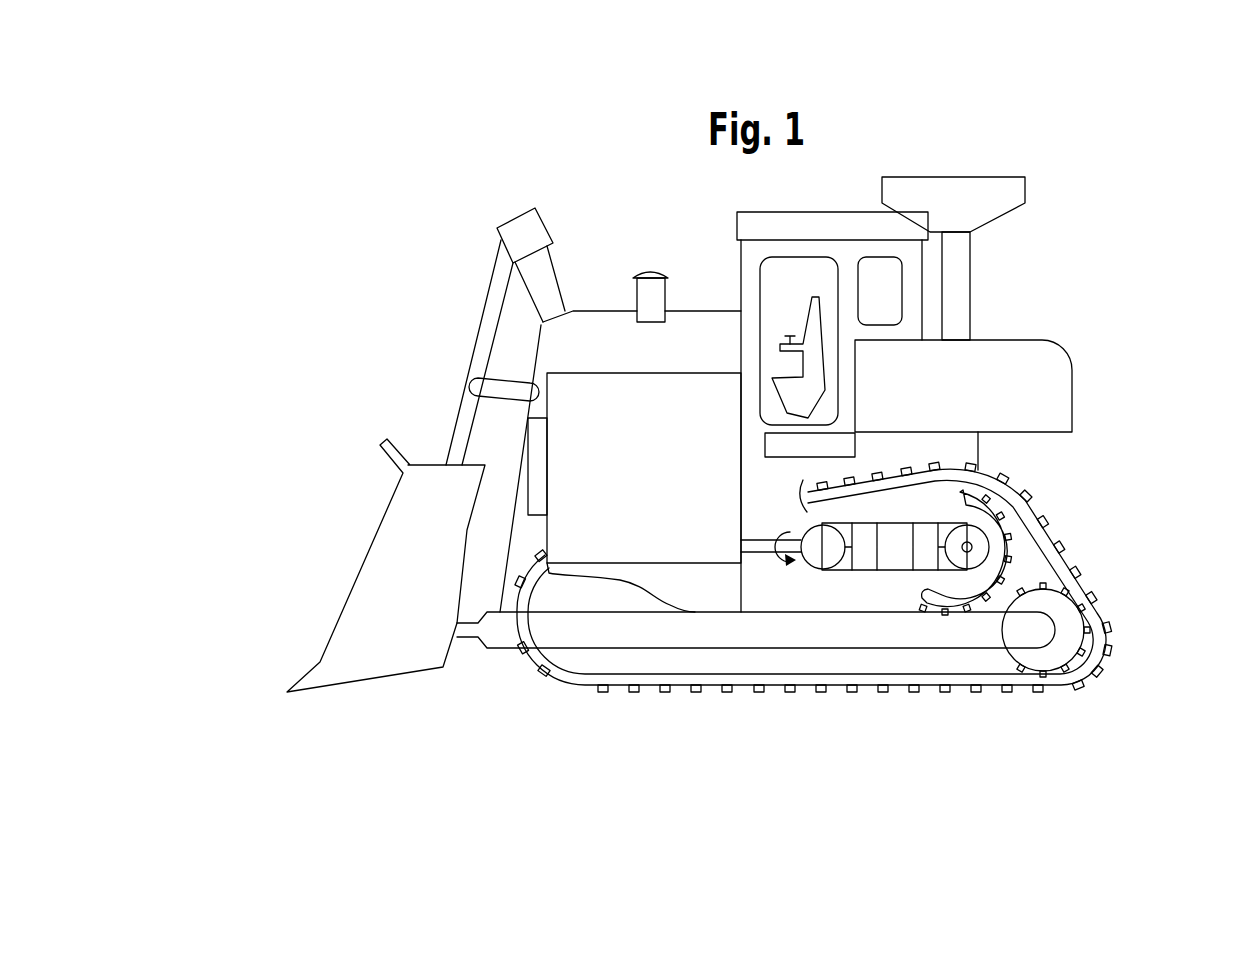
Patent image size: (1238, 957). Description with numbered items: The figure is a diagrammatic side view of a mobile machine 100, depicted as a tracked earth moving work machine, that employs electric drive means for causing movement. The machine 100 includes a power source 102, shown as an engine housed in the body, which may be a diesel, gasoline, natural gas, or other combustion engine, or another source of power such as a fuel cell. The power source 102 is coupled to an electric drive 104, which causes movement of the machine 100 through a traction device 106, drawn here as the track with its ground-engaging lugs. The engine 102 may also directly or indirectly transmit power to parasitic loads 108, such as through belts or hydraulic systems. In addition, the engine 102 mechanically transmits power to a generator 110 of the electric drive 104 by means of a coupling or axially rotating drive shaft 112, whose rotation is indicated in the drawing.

The mobile machine 100 is at (345, 347).
The power source 102 is at (595, 400).
The electric drive 104 is at (885, 598).
The traction device 106 is at (1020, 532).
The parasitic loads 108 is at (537, 447).
The generator 110 is at (822, 553).
The drive shaft 112 is at (765, 553).